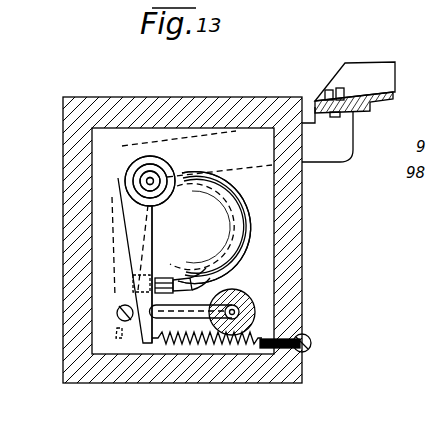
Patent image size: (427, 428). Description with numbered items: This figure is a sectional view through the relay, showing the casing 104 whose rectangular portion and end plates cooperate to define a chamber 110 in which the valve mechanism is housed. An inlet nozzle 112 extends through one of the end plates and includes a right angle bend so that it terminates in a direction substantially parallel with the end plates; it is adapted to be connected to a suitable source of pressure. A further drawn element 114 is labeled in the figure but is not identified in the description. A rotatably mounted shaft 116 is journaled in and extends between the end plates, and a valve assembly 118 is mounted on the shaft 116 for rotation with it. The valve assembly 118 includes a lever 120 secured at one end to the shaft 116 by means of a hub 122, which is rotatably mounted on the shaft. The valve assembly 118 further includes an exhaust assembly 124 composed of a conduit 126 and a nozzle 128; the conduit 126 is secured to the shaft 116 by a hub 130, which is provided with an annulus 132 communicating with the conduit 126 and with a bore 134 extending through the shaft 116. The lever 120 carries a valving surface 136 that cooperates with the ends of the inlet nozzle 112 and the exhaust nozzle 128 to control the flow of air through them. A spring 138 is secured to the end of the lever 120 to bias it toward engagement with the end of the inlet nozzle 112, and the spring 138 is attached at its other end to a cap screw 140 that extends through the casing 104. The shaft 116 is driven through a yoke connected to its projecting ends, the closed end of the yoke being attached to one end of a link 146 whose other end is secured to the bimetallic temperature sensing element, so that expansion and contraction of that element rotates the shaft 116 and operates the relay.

The casing 104 is at (290, 313).
The chamber 110 is at (102, 143).
The inlet nozzle 112 is at (186, 322).
The knob 114 is at (116, 313).
The shaft 116 is at (150, 170).
The valve assembly 118 is at (160, 229).
The lever 120 is at (128, 233).
The hub 122 is at (124, 182).
The exhaust assembly 124 is at (238, 229).
The conduit 126 is at (229, 204).
The nozzle 128 is at (205, 283).
The hub 130 is at (133, 167).
The annulus 132 is at (169, 172).
The bore 134 is at (156, 172).
The valving surface 136 is at (146, 295).
The spring 138 is at (228, 346).
The cap screw 140 is at (298, 352).
The link 146 is at (365, 97).